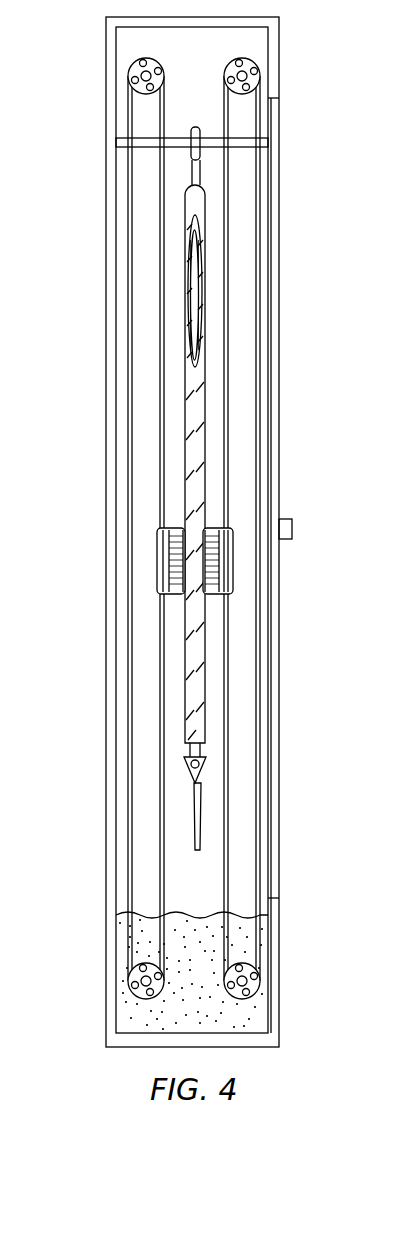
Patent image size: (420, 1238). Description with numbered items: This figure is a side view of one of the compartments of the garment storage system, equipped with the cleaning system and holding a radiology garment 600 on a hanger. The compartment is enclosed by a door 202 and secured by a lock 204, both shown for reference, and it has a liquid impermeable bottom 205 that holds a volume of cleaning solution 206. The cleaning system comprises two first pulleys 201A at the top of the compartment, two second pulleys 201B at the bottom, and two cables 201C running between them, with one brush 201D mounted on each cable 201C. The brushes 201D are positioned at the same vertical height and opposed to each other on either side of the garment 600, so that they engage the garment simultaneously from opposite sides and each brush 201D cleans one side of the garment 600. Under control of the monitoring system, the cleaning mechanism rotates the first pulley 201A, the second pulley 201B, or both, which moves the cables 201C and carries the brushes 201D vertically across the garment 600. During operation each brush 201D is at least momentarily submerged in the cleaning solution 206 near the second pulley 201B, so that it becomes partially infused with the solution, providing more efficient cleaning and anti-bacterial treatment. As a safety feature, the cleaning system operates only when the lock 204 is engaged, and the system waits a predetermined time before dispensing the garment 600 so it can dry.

The first pulley 201A is at (136, 66).
The second pulley 201B is at (134, 992).
The cable 201C is at (130, 700).
The brush 201D is at (160, 545).
The door 202 is at (280, 225).
The lock 204 is at (291, 520).
The liquid impermeable bottom 205 is at (267, 1015).
The volume of cleaning solution 206 is at (243, 937).
The garment 600 is at (207, 197).